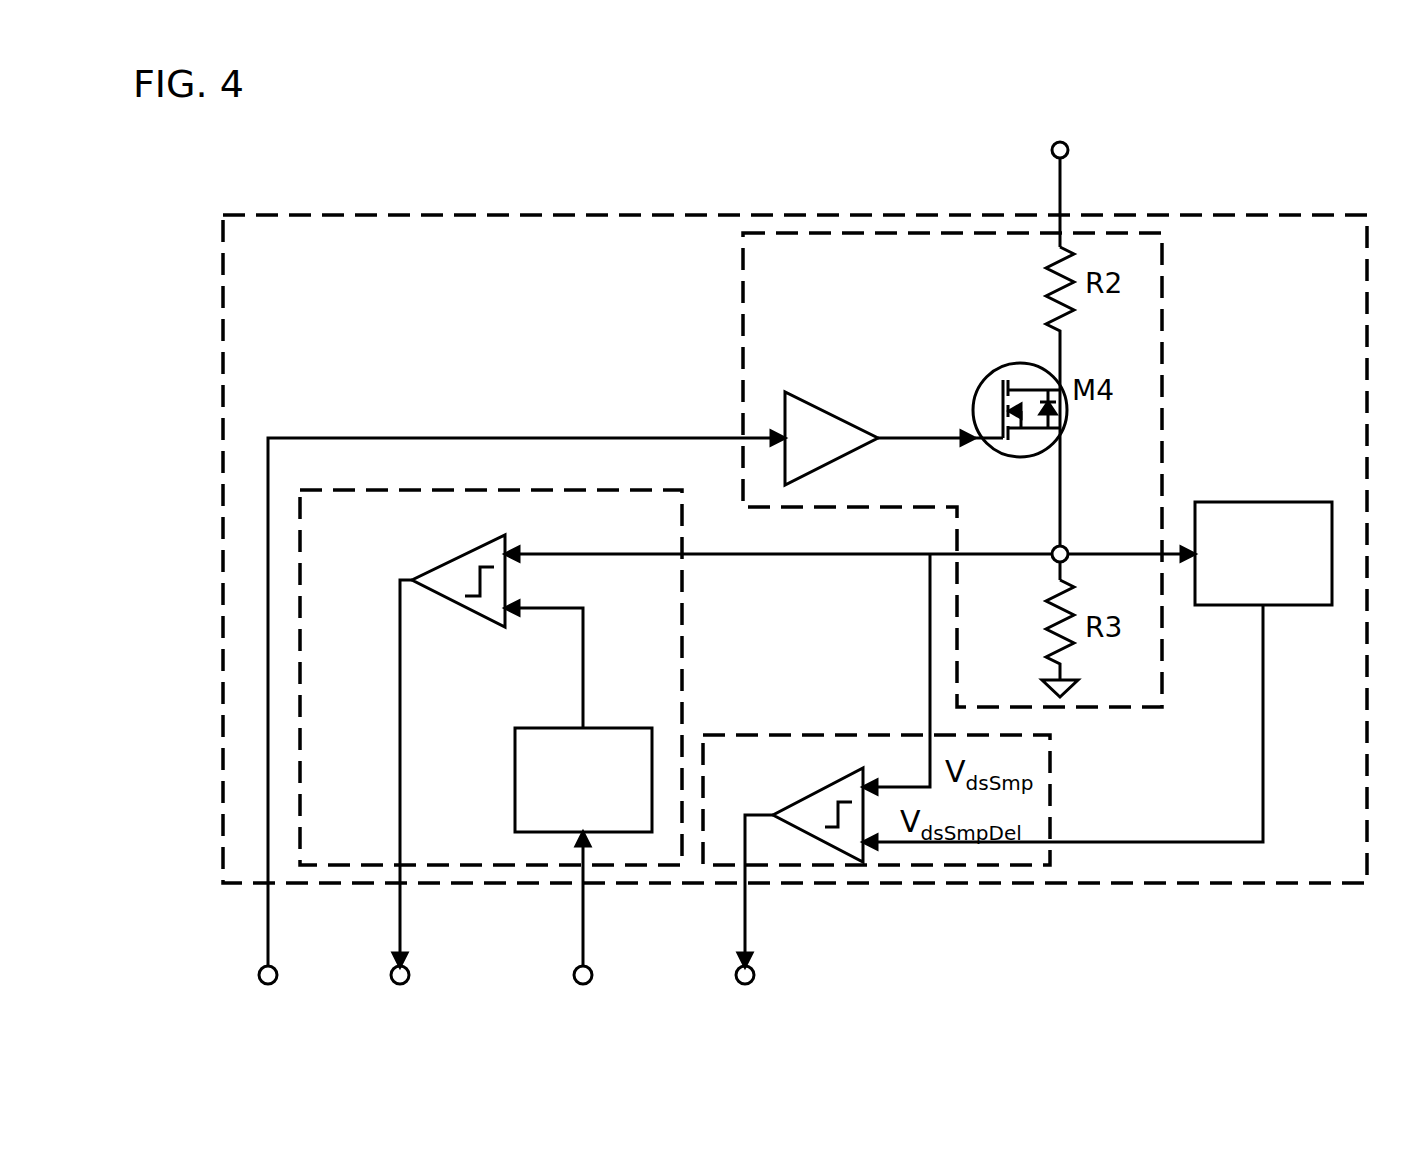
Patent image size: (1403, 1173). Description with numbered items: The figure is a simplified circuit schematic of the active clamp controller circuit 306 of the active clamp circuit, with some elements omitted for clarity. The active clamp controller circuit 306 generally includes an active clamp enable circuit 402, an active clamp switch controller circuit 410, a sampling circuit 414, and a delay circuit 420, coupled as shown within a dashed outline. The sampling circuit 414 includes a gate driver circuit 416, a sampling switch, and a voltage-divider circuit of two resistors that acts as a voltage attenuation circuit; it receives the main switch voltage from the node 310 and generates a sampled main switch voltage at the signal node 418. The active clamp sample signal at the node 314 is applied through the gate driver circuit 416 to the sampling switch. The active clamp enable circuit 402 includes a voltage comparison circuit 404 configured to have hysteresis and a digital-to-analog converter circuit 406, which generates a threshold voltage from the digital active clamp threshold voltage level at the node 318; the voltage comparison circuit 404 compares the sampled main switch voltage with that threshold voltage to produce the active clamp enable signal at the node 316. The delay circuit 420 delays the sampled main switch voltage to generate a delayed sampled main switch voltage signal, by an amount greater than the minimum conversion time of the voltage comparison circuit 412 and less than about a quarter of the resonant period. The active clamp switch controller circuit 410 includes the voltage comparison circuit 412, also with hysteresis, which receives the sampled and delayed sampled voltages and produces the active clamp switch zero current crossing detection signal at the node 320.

The active clamp controller circuit 306 is at (795, 549).
The node 310 is at (1067, 146).
The node 314 is at (277, 972).
The node 316 is at (409, 972).
The node 318 is at (592, 972).
The node 320 is at (754, 972).
The active clamp enable circuit 402 is at (491, 677).
The voltage comparison circuit 404 is at (458, 558).
The digital-to-analog converter circuit 406 is at (578, 716).
The active clamp switch controller circuit 410 is at (876, 799).
The voltage comparison circuit 412 is at (842, 770).
The sampling circuit 414 is at (952, 470).
The gate driver circuit 416 is at (822, 412).
The signal node 418 is at (1054, 548).
The delay circuit 420 is at (1098, 675).